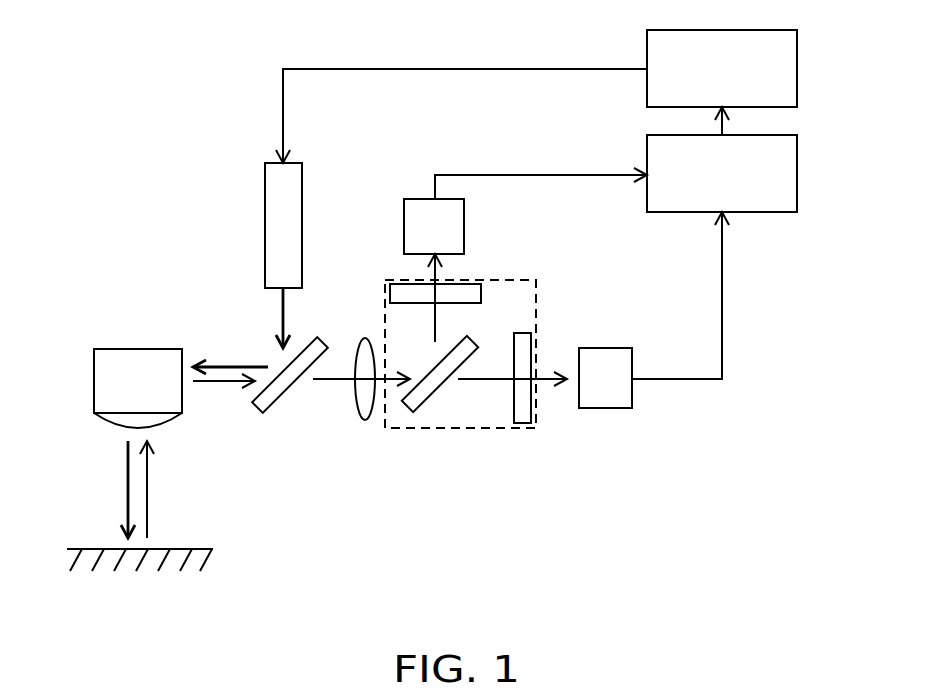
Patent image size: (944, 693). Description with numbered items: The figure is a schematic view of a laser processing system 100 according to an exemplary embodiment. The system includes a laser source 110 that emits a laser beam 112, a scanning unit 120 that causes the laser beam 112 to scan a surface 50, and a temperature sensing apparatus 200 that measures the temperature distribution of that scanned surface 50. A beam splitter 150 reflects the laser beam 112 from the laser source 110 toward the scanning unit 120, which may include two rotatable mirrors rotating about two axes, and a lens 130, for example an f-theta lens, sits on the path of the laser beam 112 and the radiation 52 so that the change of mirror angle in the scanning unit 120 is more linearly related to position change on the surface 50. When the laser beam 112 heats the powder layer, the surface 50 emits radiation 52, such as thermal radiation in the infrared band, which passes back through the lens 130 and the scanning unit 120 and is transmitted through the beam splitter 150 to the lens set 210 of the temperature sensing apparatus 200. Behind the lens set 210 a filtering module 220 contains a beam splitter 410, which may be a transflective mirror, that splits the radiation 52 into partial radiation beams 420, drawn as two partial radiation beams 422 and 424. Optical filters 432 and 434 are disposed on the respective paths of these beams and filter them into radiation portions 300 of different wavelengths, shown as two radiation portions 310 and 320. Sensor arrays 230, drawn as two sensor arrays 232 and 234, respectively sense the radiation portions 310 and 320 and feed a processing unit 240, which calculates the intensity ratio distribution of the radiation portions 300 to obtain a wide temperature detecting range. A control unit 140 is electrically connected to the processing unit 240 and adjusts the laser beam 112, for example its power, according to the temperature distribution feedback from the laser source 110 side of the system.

The laser processing system 100 is at (857, 599).
The temperature sensing apparatus 200 is at (373, 197).
The control unit 140 is at (797, 69).
The processing unit 240 is at (797, 172).
The laser source 110 is at (275, 235).
The laser beam 112 is at (283, 318).
The radiation 52 is at (343, 378).
The scanning unit 120 is at (137, 370).
The lens 130 is at (117, 418).
The surface 50 is at (97, 549).
The beam splitter 150 is at (268, 397).
The lens set 210 is at (360, 400).
The filtering module 220 is at (382, 303).
The beam splitter 410 is at (410, 413).
The partial radiation beams 420 is at (520, 385).
The partial radiation beam 422 is at (483, 380).
The partial radiation beam 424 is at (437, 324).
The radiation portions 300 is at (515, 384).
The radiation portion 310 is at (525, 446).
The radiation portion 320 is at (515, 256).
The optical filter 434 is at (469, 293).
The optical filter 432 is at (543, 383).
The sensor arrays 230 is at (542, 297).
The sensor array 234 is at (420, 207).
The sensor array 232 is at (622, 391).